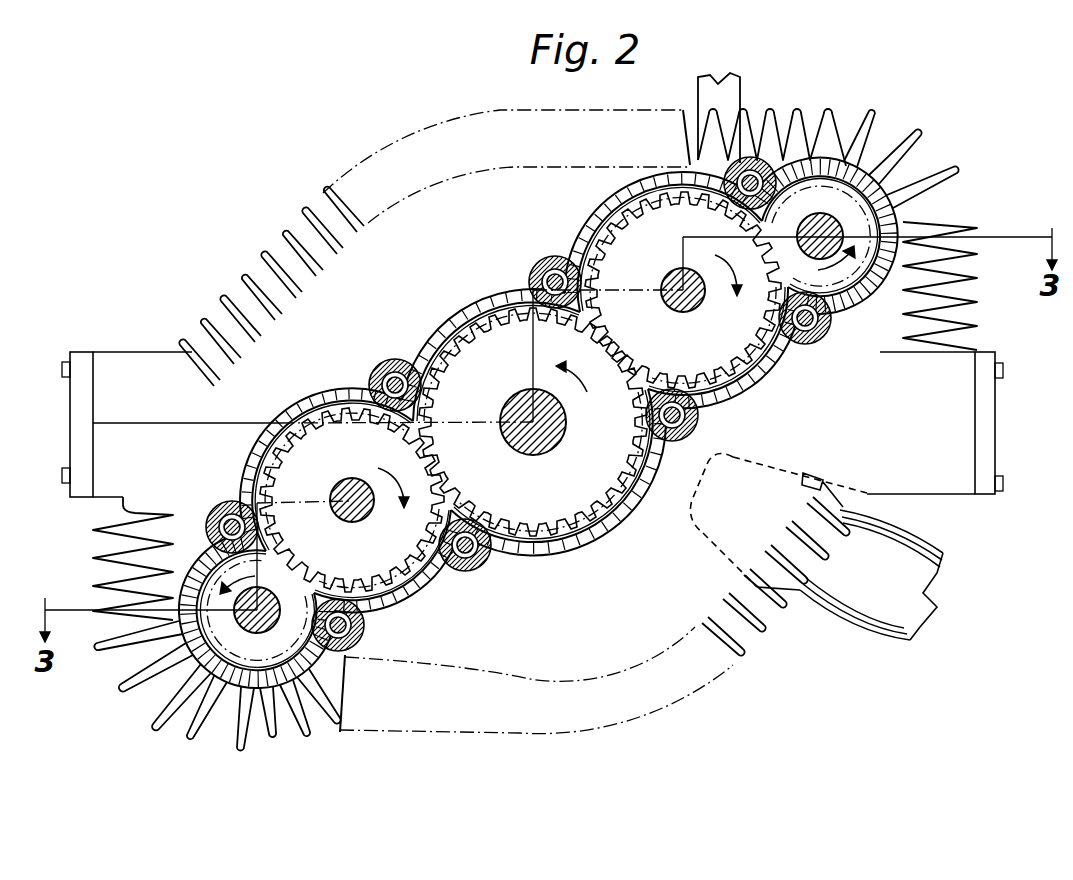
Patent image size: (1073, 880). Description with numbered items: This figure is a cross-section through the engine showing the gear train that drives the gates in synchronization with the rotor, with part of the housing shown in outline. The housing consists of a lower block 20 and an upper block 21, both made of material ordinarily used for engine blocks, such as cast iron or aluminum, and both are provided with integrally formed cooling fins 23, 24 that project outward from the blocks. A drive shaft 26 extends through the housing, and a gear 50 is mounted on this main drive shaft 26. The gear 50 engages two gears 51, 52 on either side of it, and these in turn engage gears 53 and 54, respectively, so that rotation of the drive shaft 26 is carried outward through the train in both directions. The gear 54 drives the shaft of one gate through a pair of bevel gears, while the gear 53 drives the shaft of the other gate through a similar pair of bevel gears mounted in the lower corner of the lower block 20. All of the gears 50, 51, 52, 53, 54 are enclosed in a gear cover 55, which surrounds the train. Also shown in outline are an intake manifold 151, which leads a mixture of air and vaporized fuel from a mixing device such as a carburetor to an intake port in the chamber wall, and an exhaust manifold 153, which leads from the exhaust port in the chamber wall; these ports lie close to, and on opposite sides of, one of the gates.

The lower block 20 is at (510, 632).
The upper block 21 is at (460, 212).
The cooling fins 23 is at (262, 717).
The cooling fins 24 is at (263, 268).
The drive shaft 26 is at (527, 437).
The gear 50 is at (568, 480).
The gear 51 is at (382, 545).
The gear 52 is at (723, 344).
The gear 53 is at (282, 636).
The gear 54 is at (843, 267).
The gear cover 55 is at (633, 507).
The intake manifold 151 is at (742, 102).
The exhaust manifold 153 is at (852, 612).